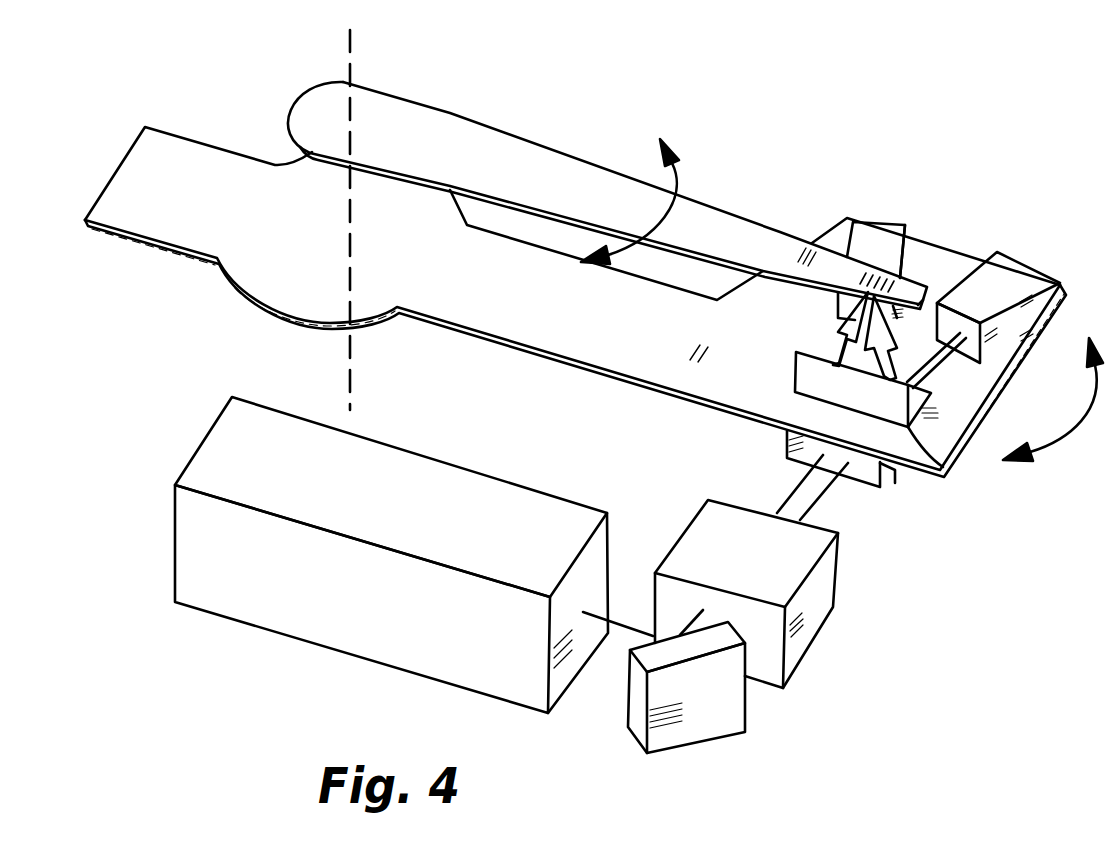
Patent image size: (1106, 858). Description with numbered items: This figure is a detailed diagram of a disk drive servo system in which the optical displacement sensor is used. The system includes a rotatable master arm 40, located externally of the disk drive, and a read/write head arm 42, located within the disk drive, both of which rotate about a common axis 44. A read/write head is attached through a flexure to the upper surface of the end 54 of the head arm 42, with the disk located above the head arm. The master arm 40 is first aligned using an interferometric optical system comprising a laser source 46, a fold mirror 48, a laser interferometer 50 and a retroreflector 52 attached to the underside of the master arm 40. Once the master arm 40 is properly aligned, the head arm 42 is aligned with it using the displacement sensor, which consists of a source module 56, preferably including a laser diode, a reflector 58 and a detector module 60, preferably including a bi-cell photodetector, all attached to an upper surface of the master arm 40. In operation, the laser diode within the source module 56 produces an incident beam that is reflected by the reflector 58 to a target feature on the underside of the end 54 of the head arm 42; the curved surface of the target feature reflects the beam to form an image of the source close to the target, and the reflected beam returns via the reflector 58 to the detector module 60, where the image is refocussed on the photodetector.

The master arm 40 is at (198, 243).
The head arm 42 is at (388, 100).
The common axis 44 is at (354, 72).
The laser source 46 is at (570, 675).
The fold mirror 48 is at (738, 703).
The laser interferometer 50 is at (803, 643).
The retroreflector 52 is at (890, 477).
The end of head arm 54 is at (922, 268).
The source module 56 is at (1037, 277).
The reflector 58 is at (945, 468).
The detector module 60 is at (905, 238).